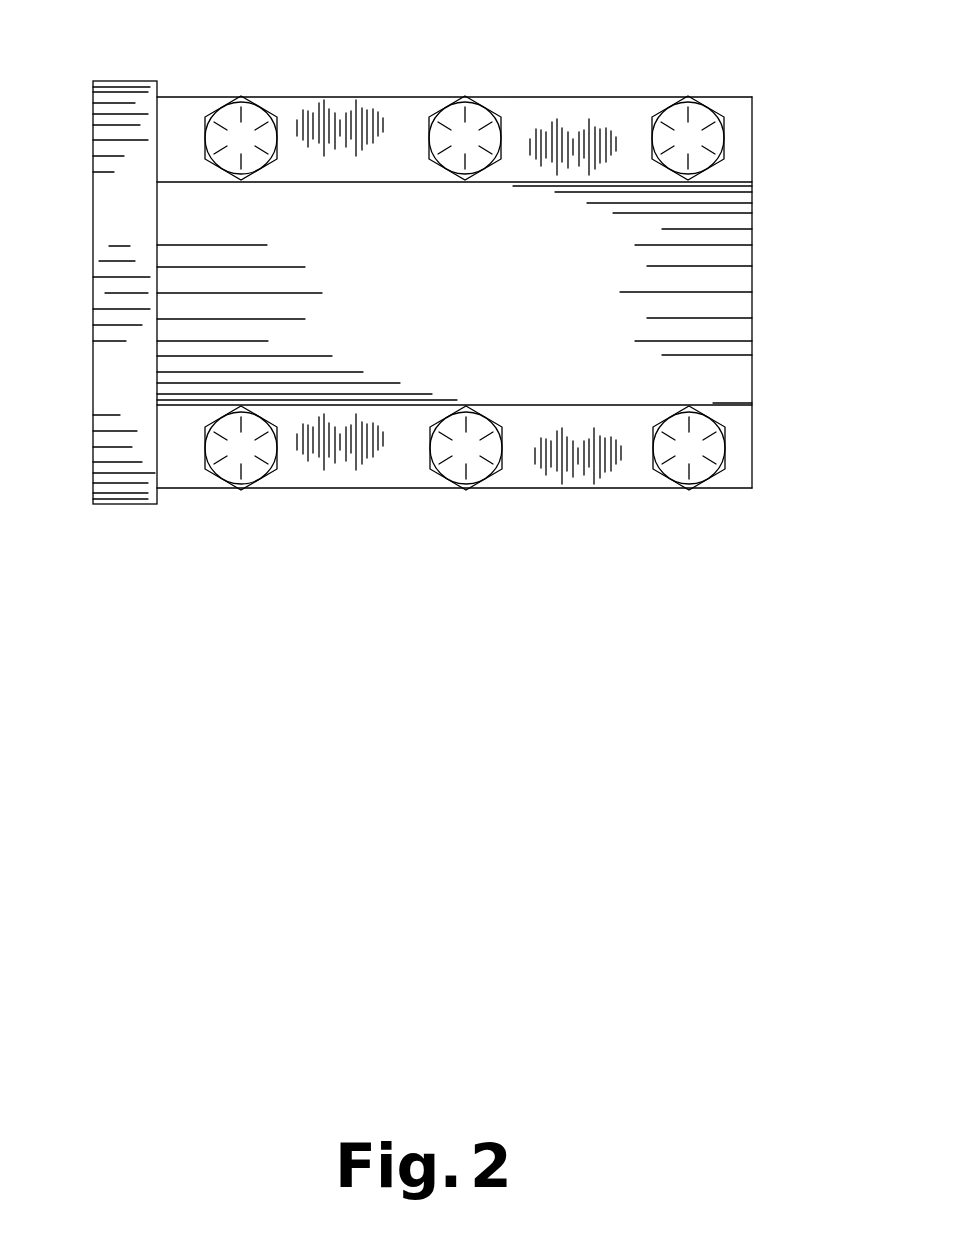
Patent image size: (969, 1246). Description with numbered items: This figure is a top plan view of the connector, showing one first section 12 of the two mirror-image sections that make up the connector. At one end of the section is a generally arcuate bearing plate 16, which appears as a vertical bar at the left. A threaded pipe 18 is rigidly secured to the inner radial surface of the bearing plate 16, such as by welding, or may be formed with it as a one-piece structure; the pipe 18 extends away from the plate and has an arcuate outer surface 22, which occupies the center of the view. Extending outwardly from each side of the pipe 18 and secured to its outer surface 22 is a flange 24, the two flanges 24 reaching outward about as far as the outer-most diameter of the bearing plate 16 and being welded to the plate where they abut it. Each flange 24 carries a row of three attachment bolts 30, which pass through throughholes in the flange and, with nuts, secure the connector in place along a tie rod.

The first section 12 is at (408, 88).
The bearing plate 16 is at (115, 84).
The threaded pipe 18 is at (752, 282).
The outer surface 22 is at (533, 304).
The flange 24 is at (737, 97).
The attachment bolt 30 is at (251, 97).